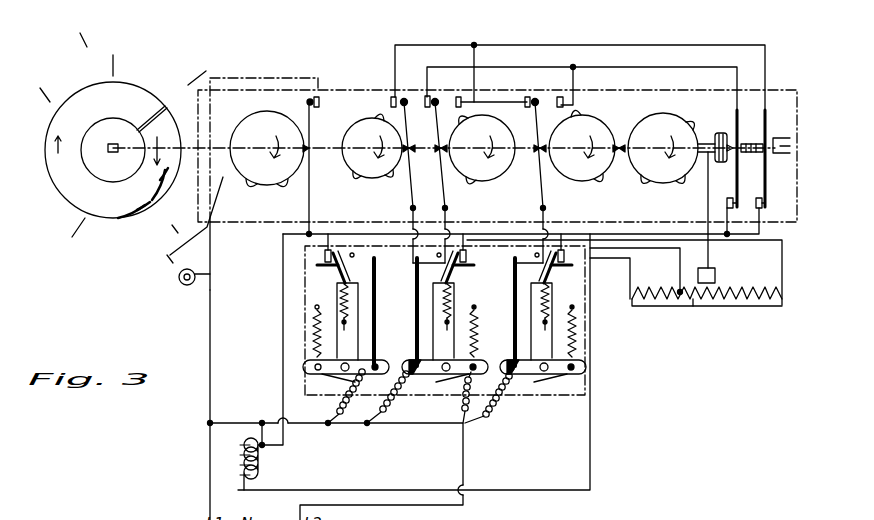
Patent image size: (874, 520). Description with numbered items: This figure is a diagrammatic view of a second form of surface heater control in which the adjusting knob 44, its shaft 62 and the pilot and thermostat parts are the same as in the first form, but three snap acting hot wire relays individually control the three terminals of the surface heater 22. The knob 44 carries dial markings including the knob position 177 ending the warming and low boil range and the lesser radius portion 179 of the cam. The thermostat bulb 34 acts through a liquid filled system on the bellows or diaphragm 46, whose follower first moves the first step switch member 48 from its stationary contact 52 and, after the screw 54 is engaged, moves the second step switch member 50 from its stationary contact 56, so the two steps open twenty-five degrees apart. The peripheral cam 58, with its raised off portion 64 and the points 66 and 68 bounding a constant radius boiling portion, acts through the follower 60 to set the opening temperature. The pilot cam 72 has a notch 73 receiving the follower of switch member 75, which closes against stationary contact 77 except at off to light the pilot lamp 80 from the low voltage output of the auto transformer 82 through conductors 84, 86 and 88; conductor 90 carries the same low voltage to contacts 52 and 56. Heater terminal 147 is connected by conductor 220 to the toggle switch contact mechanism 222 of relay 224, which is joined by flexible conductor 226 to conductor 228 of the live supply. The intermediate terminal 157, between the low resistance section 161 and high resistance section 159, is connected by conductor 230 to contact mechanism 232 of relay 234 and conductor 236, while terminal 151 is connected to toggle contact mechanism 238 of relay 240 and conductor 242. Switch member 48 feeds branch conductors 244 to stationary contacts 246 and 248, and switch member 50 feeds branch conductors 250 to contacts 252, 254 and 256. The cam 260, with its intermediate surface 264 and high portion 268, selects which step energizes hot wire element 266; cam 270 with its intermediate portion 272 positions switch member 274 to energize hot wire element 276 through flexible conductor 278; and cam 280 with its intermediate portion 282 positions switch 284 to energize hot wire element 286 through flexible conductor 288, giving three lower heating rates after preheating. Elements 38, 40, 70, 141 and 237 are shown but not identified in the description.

The surface heater 22 is at (693, 306).
The bulb 34 is at (716, 276).
The thermostat lead 38 is at (709, 245).
The timer cam housing 40 is at (240, 78).
The adjusting knob 44 is at (70, 199).
The bellows or diaphragm 46 is at (719, 132).
The first step switch member 48 is at (746, 141).
The second step switch member 50 is at (767, 200).
The stationary contact 52 is at (727, 199).
The adjustable screw 54 is at (780, 138).
The stationary contact 56 is at (757, 198).
The peripheral cam 58 is at (648, 176).
The follower 60 is at (703, 143).
The shaft 62 is at (312, 146).
The raised off portion 64 is at (686, 180).
The point on cam 66 is at (660, 113).
The point on cam 68 is at (690, 112).
The knob indicator 70 is at (152, 108).
The pilot cam 72 is at (257, 183).
The notch 73 is at (286, 180).
The switch member 75 is at (307, 103).
The stationary contact 77 is at (318, 96).
The pilot lamp 80 is at (181, 284).
The auto transformer 82 is at (262, 470).
The conductor 84 is at (283, 368).
The conductor 86 is at (210, 264).
The conductor 88 is at (210, 355).
The conductor 90 is at (642, 234).
The heater resistor 141 is at (345, 362).
The terminal 147 is at (783, 306).
The terminal 151 is at (632, 304).
The intermediate terminal 157 is at (680, 280).
The high resistance section 159 is at (720, 306).
The low resistance section 161 is at (660, 306).
The knob position 177 is at (181, 171).
The cam portion of lesser radius 179 is at (150, 203).
The conductor 220 is at (782, 290).
The toggle switch contact mechanism 222 is at (342, 268).
The hot wire relay 224 is at (333, 377).
The flexible conductor 226 is at (361, 380).
The conductor 228 is at (347, 424).
The conductor 230 is at (453, 308).
The contact mechanism 232 is at (466, 252).
The second hot wire relay 234 is at (447, 445).
The conductor 236 is at (466, 462).
The conductor 237 is at (585, 519).
The toggle contact mechanism 238 is at (550, 272).
The hot wire relay 240 is at (545, 377).
The conductor 242 is at (592, 442).
The conductor and branch conductors 244 is at (618, 67).
The stationary contact 246 is at (425, 100).
The stationary contact 248 is at (566, 103).
The conductor and branch conductors 250 is at (560, 45).
The stationary contact 252 is at (392, 98).
The stationary contact 254 is at (465, 81).
The stationary contact 256 is at (527, 97).
The cam 260 is at (355, 175).
The cam surface of intermediate radius 264 is at (394, 178).
The hot wire element 266 is at (376, 318).
The high portion 268 is at (390, 103).
The cam 270 is at (483, 181).
The portion of intermediate radius 272 is at (465, 120).
The movable switch contact member 274 is at (441, 172).
The hot wire element 276 is at (415, 348).
The flexible conductor 278 is at (389, 404).
The cam 280 is at (545, 192).
The portion of intermediate radius 282 is at (580, 117).
The switch 284 is at (541, 165).
The hot wire element 286 is at (513, 328).
The flexible conductor 288 is at (490, 406).